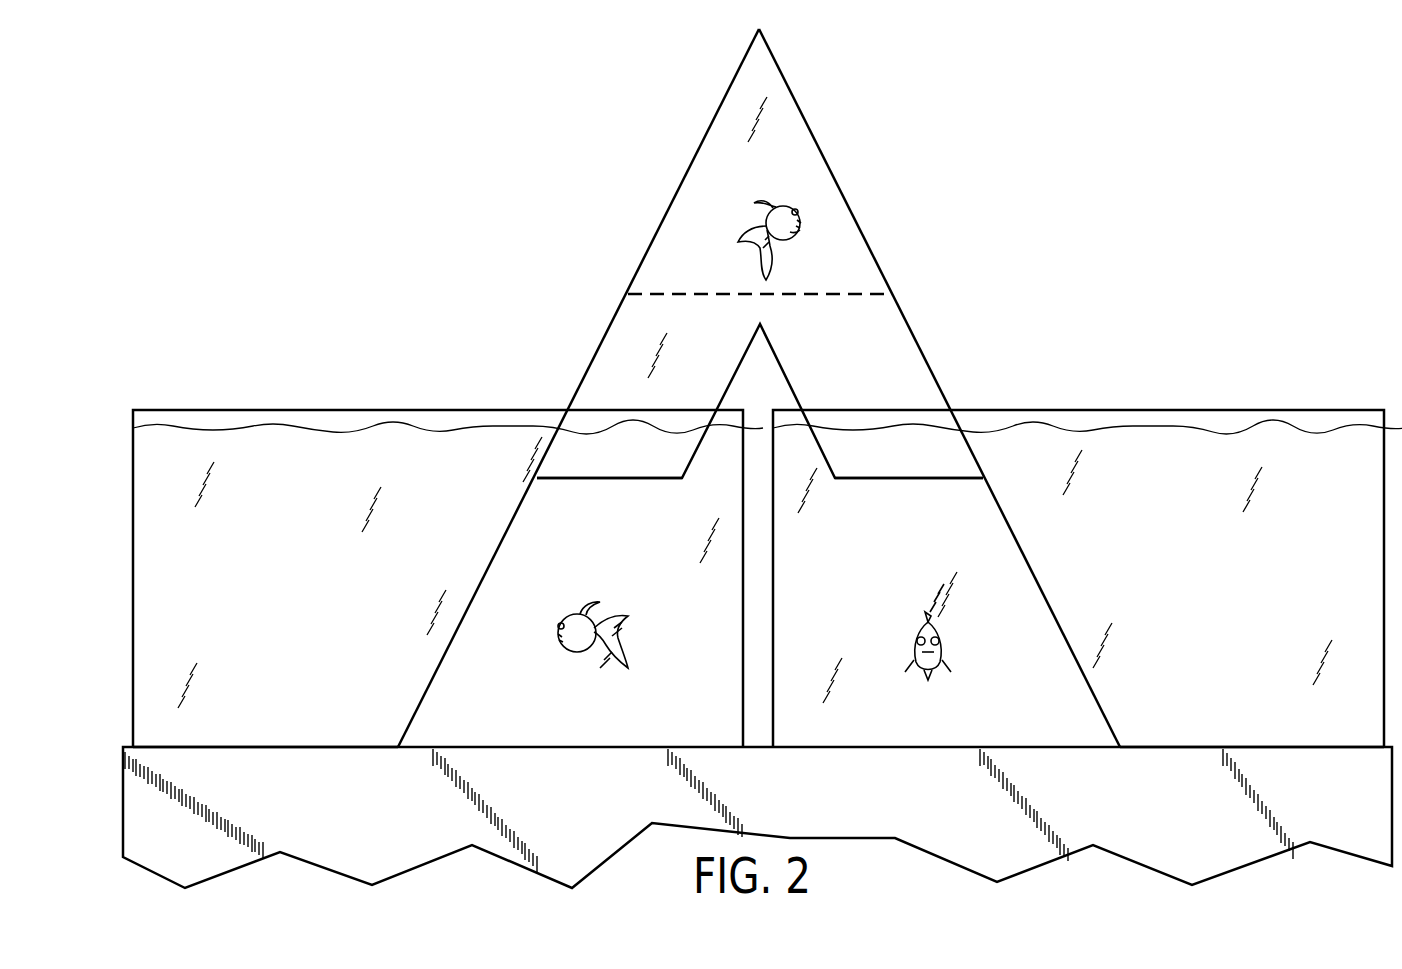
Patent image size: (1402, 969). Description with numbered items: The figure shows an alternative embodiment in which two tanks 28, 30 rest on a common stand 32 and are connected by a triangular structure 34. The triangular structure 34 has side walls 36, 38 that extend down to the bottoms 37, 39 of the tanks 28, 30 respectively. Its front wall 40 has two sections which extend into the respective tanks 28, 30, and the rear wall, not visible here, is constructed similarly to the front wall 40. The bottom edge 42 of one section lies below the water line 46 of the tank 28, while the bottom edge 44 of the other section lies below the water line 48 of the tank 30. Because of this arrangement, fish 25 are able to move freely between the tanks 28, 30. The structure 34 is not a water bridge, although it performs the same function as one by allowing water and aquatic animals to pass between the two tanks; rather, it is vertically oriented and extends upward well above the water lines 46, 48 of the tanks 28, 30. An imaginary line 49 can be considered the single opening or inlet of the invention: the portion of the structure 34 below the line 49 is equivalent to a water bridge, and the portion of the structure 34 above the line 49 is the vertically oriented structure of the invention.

The fish 25 is at (805, 240).
The tank 28 is at (133, 486).
The tank 30 is at (1384, 486).
The common stand 32 is at (1375, 846).
The triangular structure 34 is at (759, 388).
The side wall 36 is at (610, 330).
The bottom 37 is at (318, 746).
The side wall 38 is at (923, 348).
The bottom 39 is at (1197, 746).
The front wall 40 is at (776, 184).
The bottom edge 42 is at (578, 478).
The bottom edge 44 is at (901, 478).
The water line 46 is at (303, 427).
The water line 48 is at (1218, 428).
The imaginary line 49 is at (655, 294).